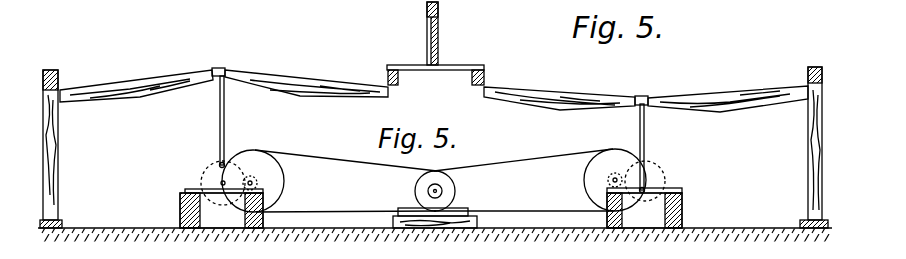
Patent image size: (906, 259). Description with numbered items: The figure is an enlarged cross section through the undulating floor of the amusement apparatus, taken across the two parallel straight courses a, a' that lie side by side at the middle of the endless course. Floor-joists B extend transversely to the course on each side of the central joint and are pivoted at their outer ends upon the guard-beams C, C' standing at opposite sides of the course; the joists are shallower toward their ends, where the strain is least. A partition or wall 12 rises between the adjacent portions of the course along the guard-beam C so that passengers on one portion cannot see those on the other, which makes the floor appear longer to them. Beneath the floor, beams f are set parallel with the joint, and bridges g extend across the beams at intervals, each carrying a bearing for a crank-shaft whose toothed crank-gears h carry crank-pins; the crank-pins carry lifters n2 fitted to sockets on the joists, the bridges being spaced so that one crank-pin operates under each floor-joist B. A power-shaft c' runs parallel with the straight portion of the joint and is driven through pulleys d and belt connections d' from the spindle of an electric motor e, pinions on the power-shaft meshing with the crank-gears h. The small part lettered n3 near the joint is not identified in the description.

The guard-beam C' is at (432, 128).
The floor-joist B is at (434, 107).
The straight course a is at (220, 50).
The straight course a' is at (646, 75).
The guard-beam C is at (430, 66).
The partition or wall 12 is at (439, 31).
The lifter n2 is at (225, 112).
The joint pin n3 is at (220, 76).
The bridge g is at (186, 190).
The beam f is at (180, 212).
The pulley d is at (423, 180).
The belt connection d' is at (434, 174).
The electric motor e is at (456, 160).
The power-shaft c' is at (610, 152).
The crank-gear h is at (660, 162).